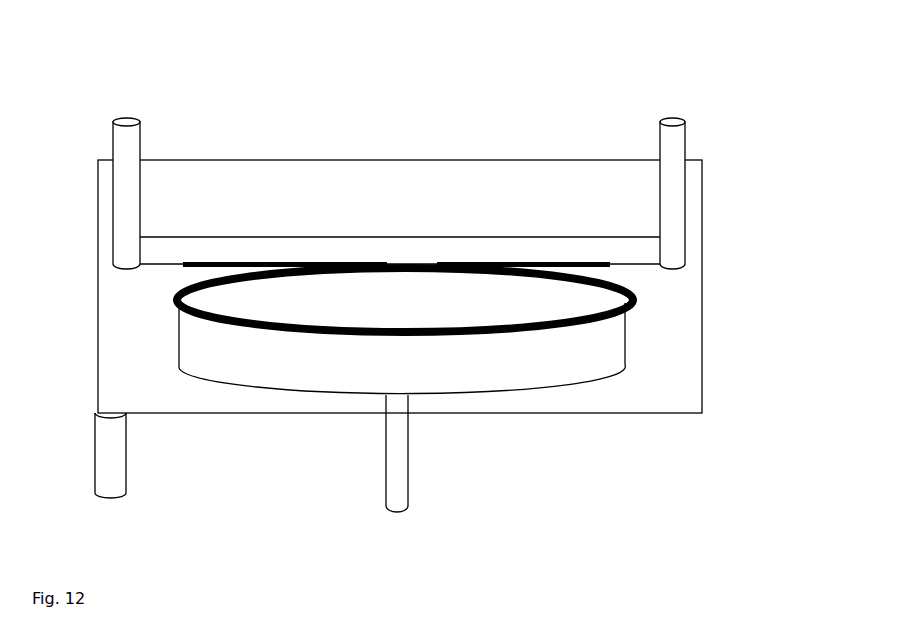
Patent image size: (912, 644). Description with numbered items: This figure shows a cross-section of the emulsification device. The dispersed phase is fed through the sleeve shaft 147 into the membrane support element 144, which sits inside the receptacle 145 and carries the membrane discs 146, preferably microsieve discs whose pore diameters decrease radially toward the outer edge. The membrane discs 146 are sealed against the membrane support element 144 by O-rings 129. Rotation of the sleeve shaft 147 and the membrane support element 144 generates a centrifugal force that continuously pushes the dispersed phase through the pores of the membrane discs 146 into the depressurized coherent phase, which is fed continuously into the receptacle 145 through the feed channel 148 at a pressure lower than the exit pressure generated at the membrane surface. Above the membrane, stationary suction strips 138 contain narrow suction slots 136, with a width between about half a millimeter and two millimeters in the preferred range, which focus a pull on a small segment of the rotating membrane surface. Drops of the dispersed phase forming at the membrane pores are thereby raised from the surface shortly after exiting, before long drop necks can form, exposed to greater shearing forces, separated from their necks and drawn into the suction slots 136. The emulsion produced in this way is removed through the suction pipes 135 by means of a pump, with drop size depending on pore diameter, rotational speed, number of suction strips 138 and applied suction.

The O-rings 129 is at (581, 325).
The suction pipes 135 is at (130, 118).
The suction slots 136 is at (527, 262).
The suction strips 138 is at (630, 252).
The membrane support element 144 is at (543, 359).
The receptacle 145 is at (528, 414).
The membrane discs 146 is at (308, 300).
The sleeve shaft 147 is at (386, 442).
The feed channel 148 is at (110, 476).